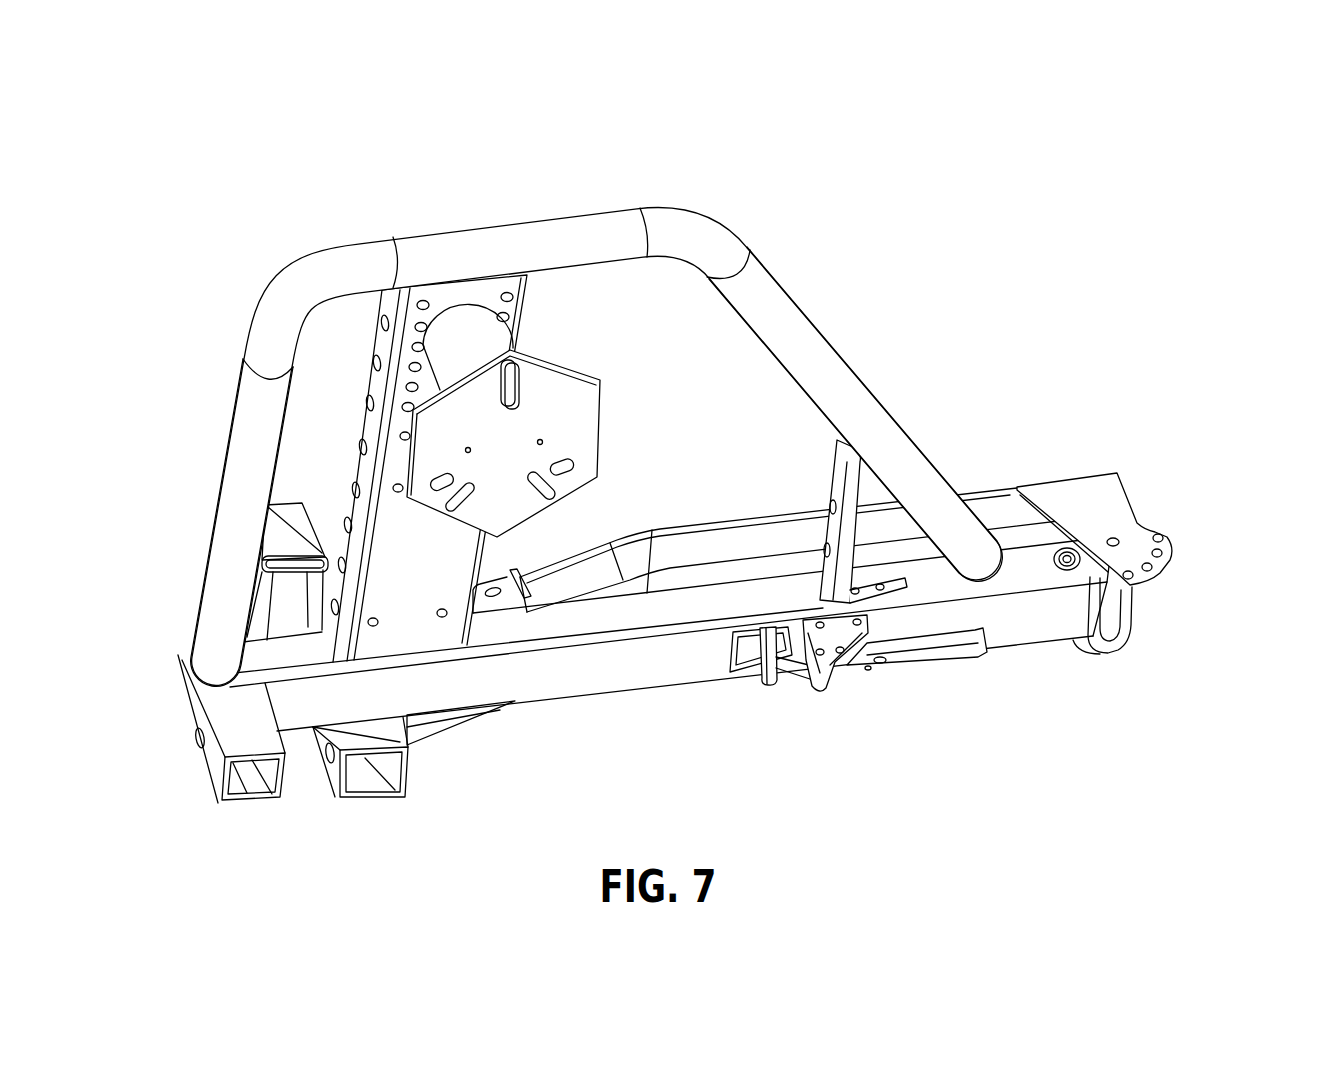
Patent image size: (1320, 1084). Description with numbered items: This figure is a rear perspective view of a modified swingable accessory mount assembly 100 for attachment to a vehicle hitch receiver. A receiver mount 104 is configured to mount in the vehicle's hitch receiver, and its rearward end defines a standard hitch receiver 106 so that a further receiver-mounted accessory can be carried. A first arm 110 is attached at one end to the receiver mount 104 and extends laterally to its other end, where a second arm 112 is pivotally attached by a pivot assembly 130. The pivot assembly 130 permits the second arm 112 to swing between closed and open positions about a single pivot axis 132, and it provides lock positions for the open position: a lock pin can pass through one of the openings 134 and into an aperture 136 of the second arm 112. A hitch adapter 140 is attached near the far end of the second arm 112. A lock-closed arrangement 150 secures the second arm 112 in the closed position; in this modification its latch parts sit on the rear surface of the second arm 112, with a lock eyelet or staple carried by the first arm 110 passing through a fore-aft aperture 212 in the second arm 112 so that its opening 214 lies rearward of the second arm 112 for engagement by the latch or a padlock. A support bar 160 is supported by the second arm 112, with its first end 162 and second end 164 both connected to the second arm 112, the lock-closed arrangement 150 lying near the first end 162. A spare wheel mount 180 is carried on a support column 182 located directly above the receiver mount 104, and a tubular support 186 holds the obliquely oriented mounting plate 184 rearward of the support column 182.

The accessory mount assembly 100 is at (944, 149).
The receiver mount 104 is at (308, 483).
The hitch receiver 106 is at (355, 797).
The first arm 110 is at (1000, 500).
The second arm 112 is at (1005, 632).
The pivot assembly 130 is at (1125, 450).
The pivot axis 132 is at (1173, 562).
The openings 134 is at (1145, 575).
The aperture 136 is at (1067, 570).
The hitch adapter 140 is at (220, 805).
The lock-closed arrangement 150 is at (923, 689).
The support bar 160 is at (538, 198).
The first end 162 is at (805, 332).
The second end 164 is at (230, 465).
The spare wheel mount 180 is at (355, 346).
The support column 182 is at (455, 550).
The mounting plate 184 is at (600, 433).
The tubular support 186 is at (487, 327).
The aperture 212 is at (734, 668).
The opening 214 is at (757, 663).